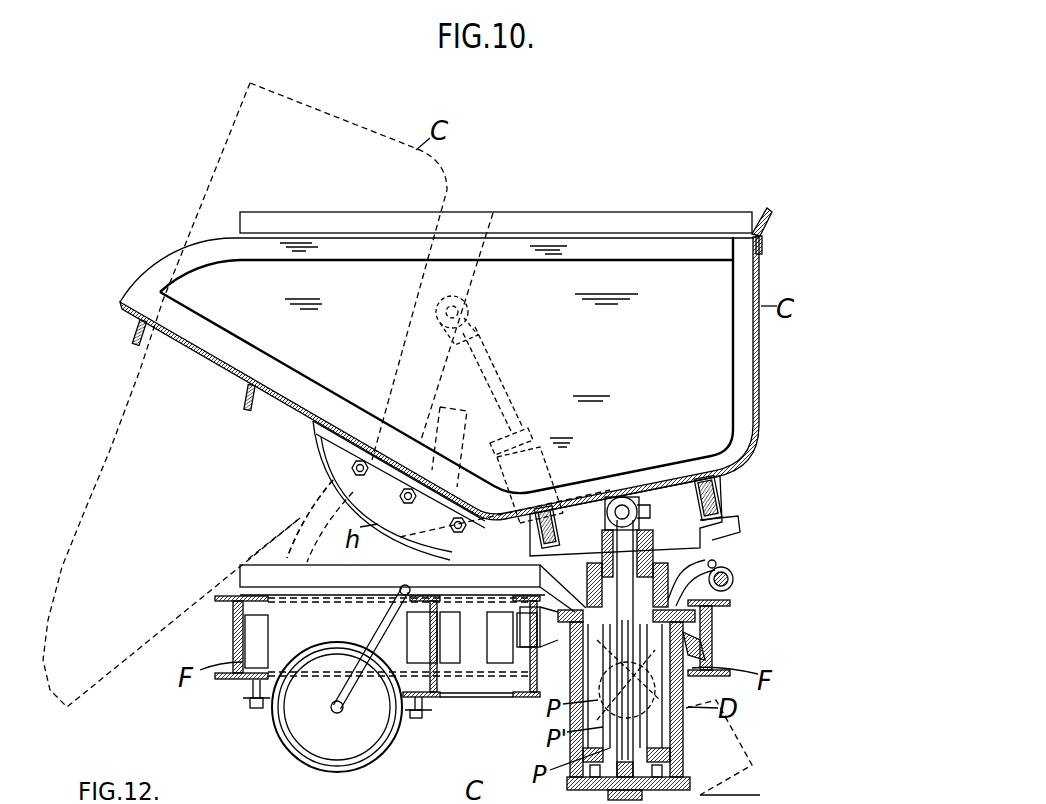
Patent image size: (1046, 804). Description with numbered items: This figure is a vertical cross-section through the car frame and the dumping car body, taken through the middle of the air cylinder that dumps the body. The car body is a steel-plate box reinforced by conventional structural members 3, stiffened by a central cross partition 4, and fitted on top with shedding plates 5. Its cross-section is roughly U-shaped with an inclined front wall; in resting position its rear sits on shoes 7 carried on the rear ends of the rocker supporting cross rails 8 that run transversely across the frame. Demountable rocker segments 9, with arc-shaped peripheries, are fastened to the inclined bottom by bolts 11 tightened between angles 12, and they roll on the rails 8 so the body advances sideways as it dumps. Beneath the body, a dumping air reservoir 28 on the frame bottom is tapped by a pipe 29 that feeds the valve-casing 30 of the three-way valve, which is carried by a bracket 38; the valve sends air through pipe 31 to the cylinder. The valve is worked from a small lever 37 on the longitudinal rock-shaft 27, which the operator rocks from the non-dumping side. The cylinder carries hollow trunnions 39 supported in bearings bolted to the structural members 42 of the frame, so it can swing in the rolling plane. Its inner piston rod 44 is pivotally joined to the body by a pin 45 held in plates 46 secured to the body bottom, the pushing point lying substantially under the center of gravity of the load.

The structural members 3 is at (718, 490).
The central cross partition 4 is at (235, 278).
The shedding plates 5 is at (597, 212).
The shoes 7 is at (727, 548).
The rocker supporting cross rails 8 is at (297, 560).
The rocker segments 9 is at (350, 502).
The bolts 11 is at (446, 526).
The angles 12 is at (343, 453).
The rock-shaft 27 is at (733, 582).
The dumping air reservoir 28 is at (293, 723).
The pipe 29 is at (383, 625).
The valve-casing 30 is at (688, 617).
The pipe 31 is at (665, 690).
The small lever 37 is at (718, 566).
The bracket 38 is at (700, 648).
The hollow trunnions 39 is at (745, 794).
The structural members 42 is at (565, 648).
The piston rod 44 is at (478, 363).
The pin 45 is at (460, 312).
The plates 46 is at (671, 500).